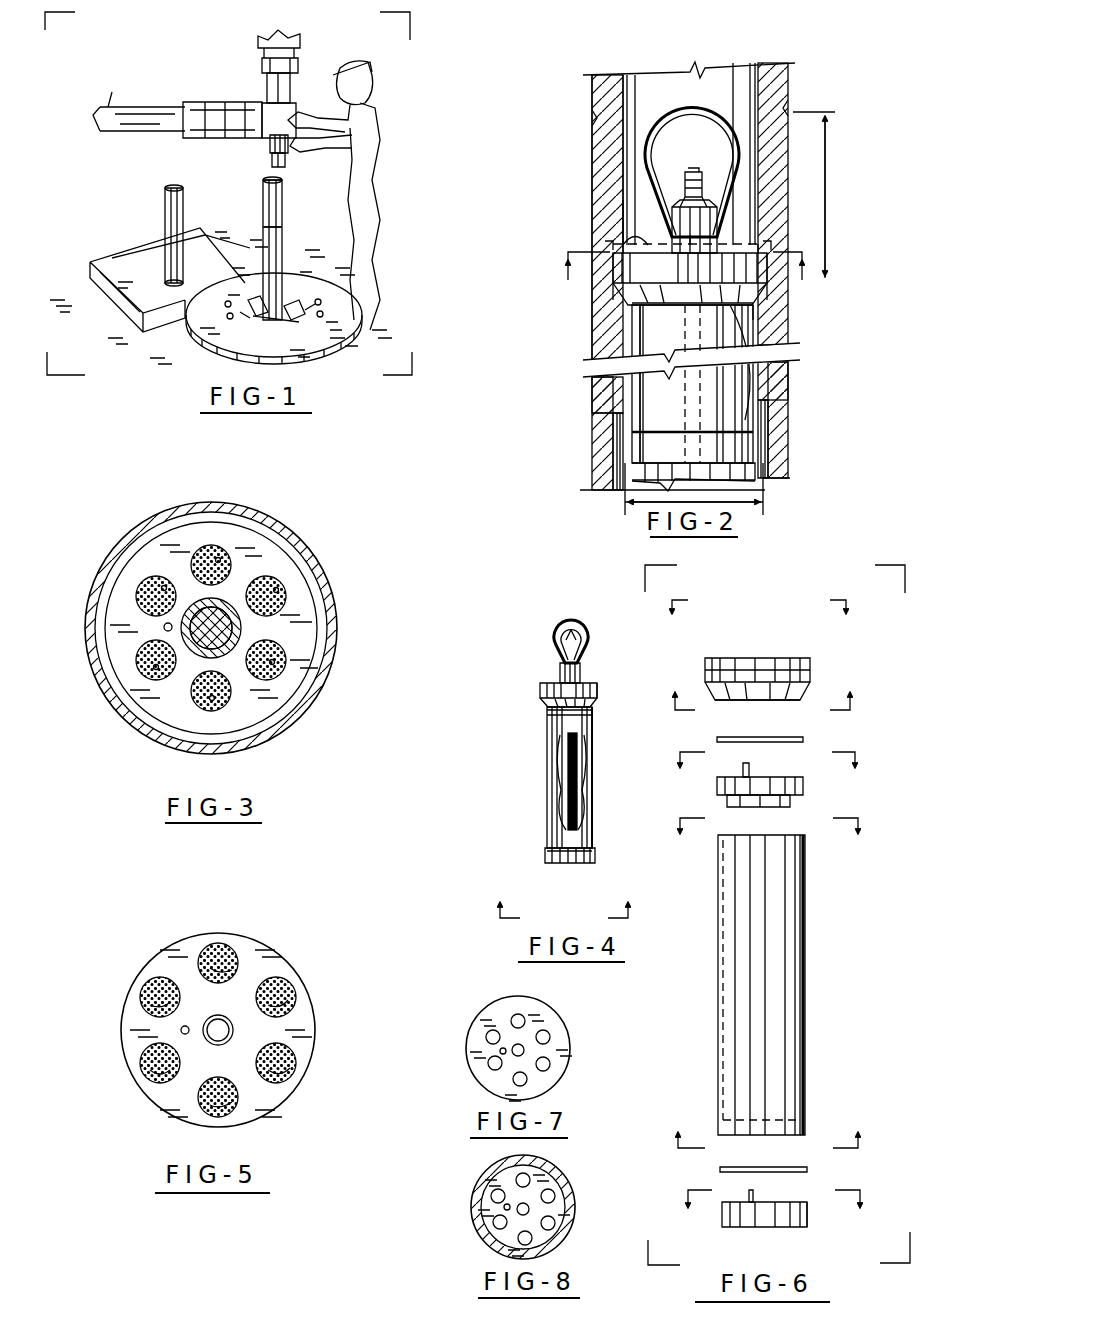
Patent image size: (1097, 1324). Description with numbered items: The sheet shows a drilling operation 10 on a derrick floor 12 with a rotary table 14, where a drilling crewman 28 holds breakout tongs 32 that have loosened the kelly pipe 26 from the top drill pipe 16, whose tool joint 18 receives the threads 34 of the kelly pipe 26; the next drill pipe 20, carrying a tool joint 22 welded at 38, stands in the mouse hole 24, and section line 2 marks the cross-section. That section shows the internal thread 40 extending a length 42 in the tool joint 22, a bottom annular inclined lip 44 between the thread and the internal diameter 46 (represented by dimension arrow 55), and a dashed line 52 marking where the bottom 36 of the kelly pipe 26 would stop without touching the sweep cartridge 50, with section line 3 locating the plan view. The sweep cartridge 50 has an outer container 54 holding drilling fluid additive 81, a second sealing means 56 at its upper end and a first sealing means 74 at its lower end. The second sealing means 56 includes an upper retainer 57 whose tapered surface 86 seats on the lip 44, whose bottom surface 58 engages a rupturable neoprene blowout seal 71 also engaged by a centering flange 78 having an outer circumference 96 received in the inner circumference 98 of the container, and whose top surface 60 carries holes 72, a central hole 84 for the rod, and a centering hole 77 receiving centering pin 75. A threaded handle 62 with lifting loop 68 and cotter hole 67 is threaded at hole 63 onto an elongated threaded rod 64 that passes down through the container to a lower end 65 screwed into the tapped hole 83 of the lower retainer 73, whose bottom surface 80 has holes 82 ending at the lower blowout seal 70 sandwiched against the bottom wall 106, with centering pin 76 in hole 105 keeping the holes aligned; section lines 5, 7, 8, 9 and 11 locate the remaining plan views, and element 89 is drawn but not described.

In FIG. 1, the drilling operation 10 is at (150, 55).
In FIG. 6, the drilling operation 10 is at (767, 847).
In FIG. 1, the derrick floor 12 is at (92, 262).
In FIG. 6, the derrick floor 12 is at (772, 1217).
In FIG. 1, the rotary table 14 is at (198, 340).
In FIG. 1, the drill pipe 16 is at (284, 240).
In FIG. 1, the tool joint 18 is at (284, 212).
In FIG. 1, the next drill pipe 20 is at (165, 244).
In FIG. 2, the next drill pipe 20 is at (598, 450).
In FIG. 1, the tool joint 22 is at (165, 202).
In FIG. 2, the tool joint 22 is at (600, 145).
In FIG. 3, the tool joint 22 is at (95, 560).
In FIG. 1, the mouse hole 24 is at (118, 304).
In FIG. 1, the kelly pipe 26 is at (263, 65).
In FIG. 2, the kelly pipe 26 is at (603, 75).
In FIG. 1, the drilling crewman 28 is at (302, 42).
In FIG. 1, the breakout tongs 32 is at (222, 104).
In FIG. 1, the threads 34 is at (286, 188).
In FIG. 2, the threads 34 is at (597, 115).
In FIG. 1, the bottom of kelly pipe 36 is at (276, 167).
In FIG. 2, the bottom of kelly pipe 36 is at (605, 244).
In FIG. 1, the weld 38 is at (262, 256).
In FIG. 2, the weld 38 is at (600, 428).
In FIG. 2, the internal thread 40 is at (600, 180).
In FIG. 2, the thread length dimension 42 is at (828, 185).
In FIG. 2, the bottom annular inclined lip 44 is at (592, 290).
In FIG. 3, the bottom annular inclined lip 44 is at (90, 598).
In FIG. 2, the internal diameter 46 is at (760, 370).
In FIG. 2, the sweep cartridge 50 is at (641, 346).
In FIG. 4, the sweep cartridge 50 is at (547, 762).
In FIG. 6, the sweep cartridge 50 is at (776, 993).
In FIG. 2, the dashed line 52 is at (625, 220).
In FIG. 2, the outer container 54 is at (635, 328).
In FIG. 4, the outer container 54 is at (592, 740).
In FIG. 6, the outer container 54 is at (805, 905).
In FIG. 2, the dimension arrow 55 is at (763, 502).
In FIG. 2, the second sealing means 56 is at (638, 281).
In FIG. 3, the second sealing means 56 is at (285, 565).
In FIG. 4, the second sealing means 56 is at (542, 690).
In FIG. 6, the second sealing means 56 is at (785, 658).
In FIG. 7, the second sealing means 56 is at (568, 1035).
In FIG. 8, the second sealing means 56 is at (560, 1240).
In FIG. 2, the upper retainer 57 is at (585, 268).
In FIG. 3, the upper retainer 57 is at (325, 580).
In FIG. 4, the upper retainer 57 is at (597, 690).
In FIG. 6, the upper retainer 57 is at (752, 665).
In FIG. 7, the upper retainer 57 is at (555, 1085).
In FIG. 2, the bottom surface 58 is at (752, 310).
In FIG. 6, the bottom surface 58 is at (812, 698).
In FIG. 8, the bottom surface 58 is at (480, 1175).
In FIG. 2, the top surface 60 is at (640, 236).
In FIG. 3, the top surface 60 is at (248, 548).
In FIG. 7, the top surface 60 is at (565, 1045).
In FIG. 2, the threaded handle 62 is at (717, 230).
In FIG. 3, the threaded handle 62 is at (165, 742).
In FIG. 4, the threaded handle 62 is at (560, 670).
In FIG. 3, the drilled and tapped hole 63 is at (240, 628).
In FIG. 2, the threaded rod 64 is at (692, 175).
In FIG. 3, the threaded rod 64 is at (226, 628).
In FIG. 4, the threaded rod 64 is at (571, 620).
In FIG. 5, the threaded rod 64 is at (233, 1030).
In FIG. 2, the lower end 65 is at (700, 470).
In FIG. 4, the lower end 65 is at (572, 866).
In FIG. 2, the hole 67 is at (702, 186).
In FIG. 4, the hole 67 is at (588, 645).
In FIG. 2, the lifting loop 68 is at (708, 100).
In FIG. 4, the lifting loop 68 is at (555, 638).
In FIG. 2, the rupturable neoprene blowout seal 70 is at (762, 455).
In FIG. 4, the rupturable neoprene blowout seal 70 is at (592, 853).
In FIG. 5, the rupturable neoprene blowout seal 70 is at (235, 960).
In FIG. 6, the rupturable neoprene blowout seal 70 is at (805, 1170).
In FIG. 2, the rupturable neoprene blowout seal 71 is at (765, 302).
In FIG. 3, the rupturable neoprene blowout seal 71 is at (165, 585).
In FIG. 4, the rupturable neoprene blowout seal 71 is at (592, 710).
In FIG. 6, the rupturable neoprene blowout seal 71 is at (775, 737).
In FIG. 3, the holes 72 is at (158, 578).
In FIG. 7, the holes 72 is at (490, 1035).
In FIG. 8, the holes 72 is at (495, 1195).
In FIG. 2, the lower retainer 73 is at (758, 482).
In FIG. 5, the lower retainer 73 is at (300, 985).
In FIG. 6, the lower retainer 73 is at (755, 1228).
In FIG. 2, the first sealing means 74 is at (760, 475).
In FIG. 4, the first sealing means 74 is at (547, 856).
In FIG. 6, the first sealing means 74 is at (795, 1228).
In FIG. 3, the centering pin 75 is at (164, 630).
In FIG. 6, the centering pin 75 is at (742, 770).
In FIG. 5, the centering pin 76 is at (180, 1030).
In FIG. 6, the centering pin 76 is at (752, 1195).
In FIG. 3, the centering hole 77 is at (165, 622).
In FIG. 7, the centering hole 77 is at (500, 1050).
In FIG. 8, the centering hole 77 is at (504, 1207).
In FIG. 2, the centering flange 78 is at (612, 292).
In FIG. 4, the centering flange 78 is at (547, 715).
In FIG. 6, the centering flange 78 is at (805, 785).
In FIG. 5, the bottom surface 80 is at (305, 1028).
In FIG. 4, the drilling fluid additive 81 is at (557, 795).
In FIG. 5, the holes 82 is at (150, 980).
In FIG. 5, the drilled and tapped hole 83 is at (140, 1035).
In FIG. 7, the centrally positioned hole 84 is at (525, 1052).
In FIG. 8, the centrally positioned hole 84 is at (530, 1210).
In FIG. 2, the tapered surface 86 is at (760, 383).
In FIG. 4, the tapered surface 86 is at (548, 703).
In FIG. 6, the tapered surface 86 is at (738, 698).
In FIG. 8, the tapered surface 86 is at (560, 1180).
In FIG. 6, the spacer top 89 is at (780, 777).
In FIG. 6, the outer circumference 96 is at (790, 805).
In FIG. 6, the inner circumference 98 is at (800, 935).
In FIG. 5, the hole 105 is at (180, 1028).
In FIG. 6, the bottom wall 106 is at (760, 1125).
In FIG. 1, the section line 2— 2 is at (173, 187).
In FIG. 2, the section line 3— 3 is at (685, 280).
In FIG. 4, the section line 5— 5 is at (563, 892).
In FIG. 6, the section line 7— 7 is at (758, 627).
In FIG. 6, the section line 8— 8 is at (761, 683).
In FIG. 6, the section line 9— 9 is at (767, 779).
In FIG. 6, the section line 11— 11 is at (764, 1115).